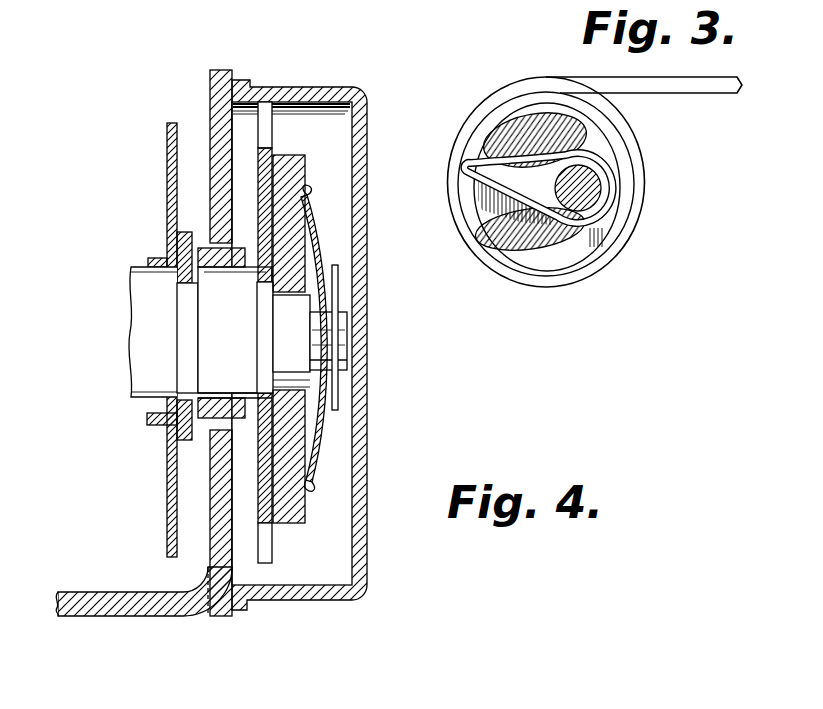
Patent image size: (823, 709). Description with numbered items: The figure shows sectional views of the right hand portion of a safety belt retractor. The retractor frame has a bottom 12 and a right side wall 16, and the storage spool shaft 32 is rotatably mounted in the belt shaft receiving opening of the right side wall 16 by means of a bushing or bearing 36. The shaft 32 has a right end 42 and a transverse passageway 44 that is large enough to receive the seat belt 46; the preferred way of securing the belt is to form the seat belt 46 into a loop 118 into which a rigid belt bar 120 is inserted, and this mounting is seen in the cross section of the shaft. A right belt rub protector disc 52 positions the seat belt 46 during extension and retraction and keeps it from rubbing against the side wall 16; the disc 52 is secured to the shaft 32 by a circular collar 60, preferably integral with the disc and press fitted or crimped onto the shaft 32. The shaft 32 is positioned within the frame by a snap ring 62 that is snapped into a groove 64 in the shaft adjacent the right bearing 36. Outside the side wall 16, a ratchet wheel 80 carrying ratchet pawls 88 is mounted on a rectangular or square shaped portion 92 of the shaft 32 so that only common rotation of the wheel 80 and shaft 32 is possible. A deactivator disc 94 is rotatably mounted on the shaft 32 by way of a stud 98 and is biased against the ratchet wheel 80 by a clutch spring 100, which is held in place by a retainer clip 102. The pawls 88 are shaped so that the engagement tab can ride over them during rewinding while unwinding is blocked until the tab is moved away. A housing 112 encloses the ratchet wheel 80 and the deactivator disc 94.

In FIG. 4, the bottom 12 is at (100, 605).
In FIG. 4, the right side wall 16 is at (215, 95).
In FIG. 4, the storage spool shaft 32 is at (145, 330).
In FIG. 3, the storage spool shaft 32 is at (557, 263).
In FIG. 4, the bearing 36 is at (200, 422).
In FIG. 4, the right end 42 is at (218, 312).
In FIG. 3, the transverse passageway 44 is at (498, 200).
In FIG. 3, the seat belt 46 is at (593, 80).
In FIG. 4, the right belt rub protector disc 52 is at (170, 527).
In FIG. 4, the circular collar 60 is at (155, 262).
In FIG. 4, the snap ring 62 is at (183, 262).
In FIG. 4, the groove 64 is at (190, 360).
In FIG. 4, the ratchet wheel 80 is at (262, 500).
In FIG. 4, the ratchet pawls 88 is at (265, 118).
In FIG. 4, the rectangular or square shaped portion 92 is at (265, 310).
In FIG. 4, the deactivator disc 94 is at (298, 157).
In FIG. 4, the stud 98 is at (300, 330).
In FIG. 4, the clutch spring 100 is at (315, 440).
In FIG. 4, the retainer clip 102 is at (338, 392).
In FIG. 4, the housing 112 is at (325, 600).
In FIG. 3, the loop 118 is at (612, 175).
In FIG. 3, the belt bar 120 is at (588, 193).